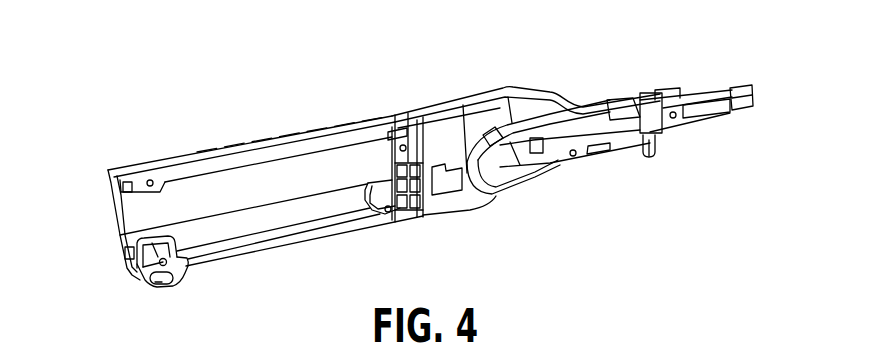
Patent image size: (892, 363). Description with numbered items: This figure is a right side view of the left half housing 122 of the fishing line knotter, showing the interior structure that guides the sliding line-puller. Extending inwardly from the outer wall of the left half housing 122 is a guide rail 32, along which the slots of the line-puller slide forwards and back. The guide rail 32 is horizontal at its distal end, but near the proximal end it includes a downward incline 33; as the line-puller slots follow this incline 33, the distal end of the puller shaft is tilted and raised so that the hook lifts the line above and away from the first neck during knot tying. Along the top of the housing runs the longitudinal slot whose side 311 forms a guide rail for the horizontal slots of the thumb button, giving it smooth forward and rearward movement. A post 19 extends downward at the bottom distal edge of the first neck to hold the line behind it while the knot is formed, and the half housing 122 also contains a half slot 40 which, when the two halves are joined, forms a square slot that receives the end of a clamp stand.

The left half housing 122 is at (273, 113).
The side of the slot 311 is at (427, 120).
The half slot 40 is at (413, 212).
The downward incline 33 is at (494, 196).
The guide rail 32 is at (549, 115).
The post 19 is at (650, 157).